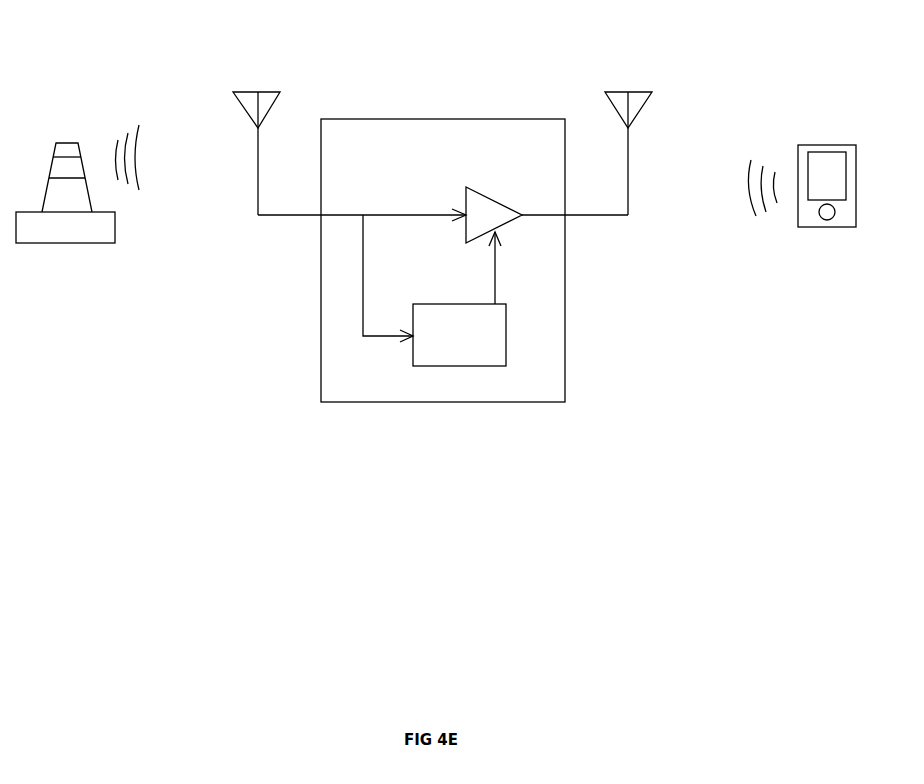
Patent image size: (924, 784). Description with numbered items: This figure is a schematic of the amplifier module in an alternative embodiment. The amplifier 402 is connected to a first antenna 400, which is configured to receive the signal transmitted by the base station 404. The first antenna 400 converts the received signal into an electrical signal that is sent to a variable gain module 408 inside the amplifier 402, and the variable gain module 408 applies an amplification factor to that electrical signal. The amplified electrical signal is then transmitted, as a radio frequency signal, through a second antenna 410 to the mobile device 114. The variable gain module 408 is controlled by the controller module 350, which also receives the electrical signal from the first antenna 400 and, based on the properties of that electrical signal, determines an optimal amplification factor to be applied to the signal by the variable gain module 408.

The base station 404 is at (62, 244).
The first antenna 400 is at (277, 101).
The second antenna 410 is at (652, 103).
The amplifier 402 is at (359, 402).
The variable gain module 408 is at (493, 200).
The controller module 350 is at (507, 331).
The mobile device 114 is at (825, 228).